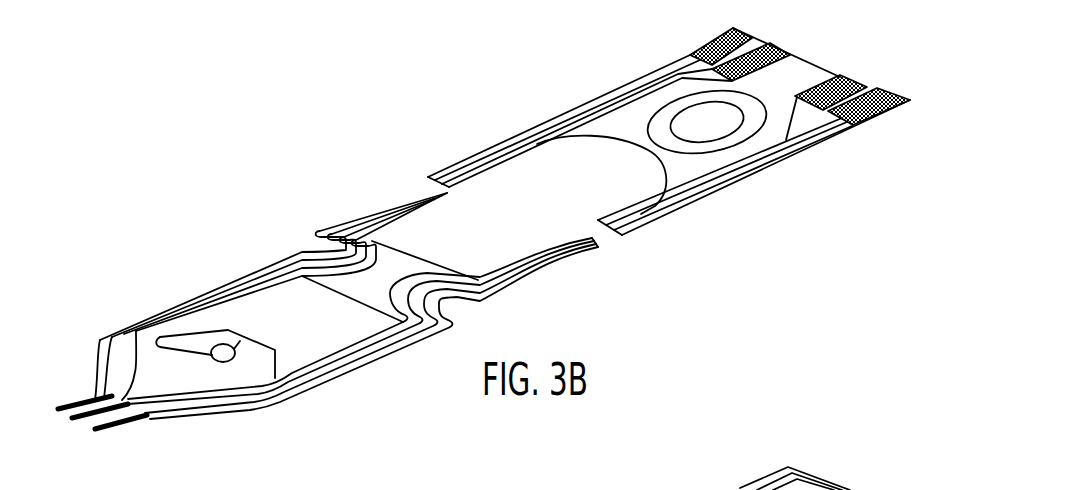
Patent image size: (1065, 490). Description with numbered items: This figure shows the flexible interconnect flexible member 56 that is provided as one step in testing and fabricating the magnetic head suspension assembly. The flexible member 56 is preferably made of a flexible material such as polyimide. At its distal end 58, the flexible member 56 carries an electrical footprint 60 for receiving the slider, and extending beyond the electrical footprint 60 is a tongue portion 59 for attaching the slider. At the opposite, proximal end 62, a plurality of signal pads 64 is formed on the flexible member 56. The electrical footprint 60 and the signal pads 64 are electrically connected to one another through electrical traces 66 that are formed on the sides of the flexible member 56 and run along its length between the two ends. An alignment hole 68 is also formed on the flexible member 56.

The flexible member 56 is at (456, 125).
The distal end 58 is at (101, 431).
The tongue portion 59 is at (245, 339).
The electrical footprint 60 is at (80, 403).
The proximal end 62 is at (826, 73).
The signal pads 64 is at (762, 45).
The electrical traces 66 is at (392, 206).
The alignment hole 68 is at (672, 112).